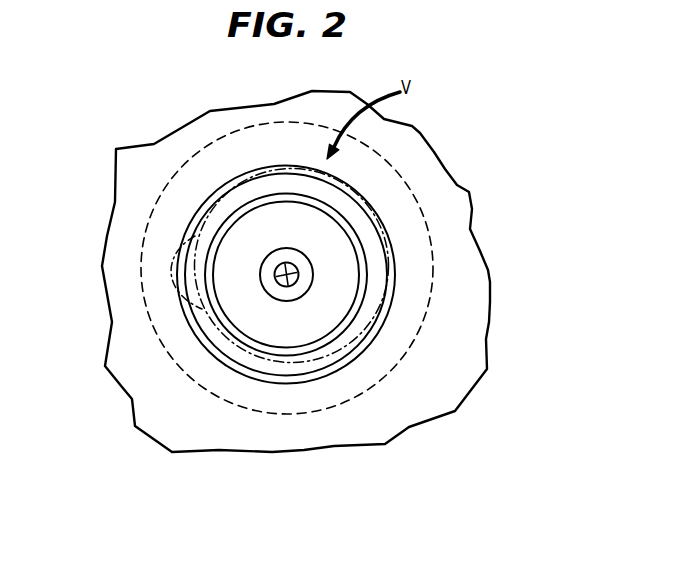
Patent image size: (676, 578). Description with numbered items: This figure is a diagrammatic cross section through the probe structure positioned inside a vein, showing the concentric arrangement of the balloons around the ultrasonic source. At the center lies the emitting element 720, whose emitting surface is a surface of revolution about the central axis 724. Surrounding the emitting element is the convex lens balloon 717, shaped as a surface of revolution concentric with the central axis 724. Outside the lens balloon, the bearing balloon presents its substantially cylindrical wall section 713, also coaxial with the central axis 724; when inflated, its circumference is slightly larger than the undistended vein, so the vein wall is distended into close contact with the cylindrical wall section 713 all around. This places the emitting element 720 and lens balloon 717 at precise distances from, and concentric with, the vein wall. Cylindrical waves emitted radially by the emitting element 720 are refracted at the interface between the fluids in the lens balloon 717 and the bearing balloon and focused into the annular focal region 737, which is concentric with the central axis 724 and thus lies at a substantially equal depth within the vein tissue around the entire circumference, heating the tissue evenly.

The cylindrical wall section 713 is at (388, 301).
The lens balloon 717 is at (335, 212).
The emitting element 720 is at (281, 299).
The central axis 724 is at (291, 264).
The annular focal region 737 is at (383, 372).